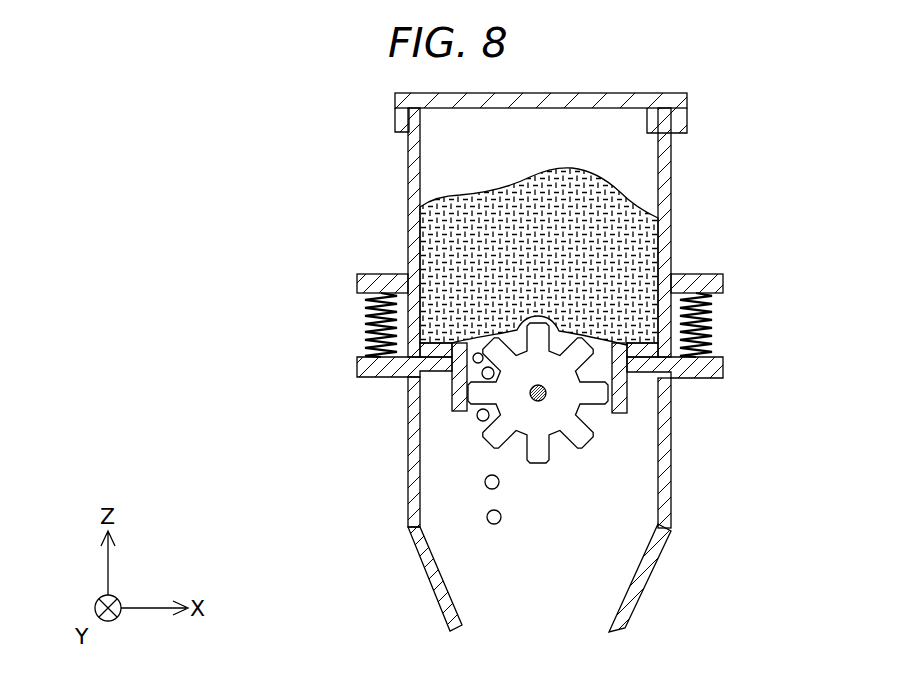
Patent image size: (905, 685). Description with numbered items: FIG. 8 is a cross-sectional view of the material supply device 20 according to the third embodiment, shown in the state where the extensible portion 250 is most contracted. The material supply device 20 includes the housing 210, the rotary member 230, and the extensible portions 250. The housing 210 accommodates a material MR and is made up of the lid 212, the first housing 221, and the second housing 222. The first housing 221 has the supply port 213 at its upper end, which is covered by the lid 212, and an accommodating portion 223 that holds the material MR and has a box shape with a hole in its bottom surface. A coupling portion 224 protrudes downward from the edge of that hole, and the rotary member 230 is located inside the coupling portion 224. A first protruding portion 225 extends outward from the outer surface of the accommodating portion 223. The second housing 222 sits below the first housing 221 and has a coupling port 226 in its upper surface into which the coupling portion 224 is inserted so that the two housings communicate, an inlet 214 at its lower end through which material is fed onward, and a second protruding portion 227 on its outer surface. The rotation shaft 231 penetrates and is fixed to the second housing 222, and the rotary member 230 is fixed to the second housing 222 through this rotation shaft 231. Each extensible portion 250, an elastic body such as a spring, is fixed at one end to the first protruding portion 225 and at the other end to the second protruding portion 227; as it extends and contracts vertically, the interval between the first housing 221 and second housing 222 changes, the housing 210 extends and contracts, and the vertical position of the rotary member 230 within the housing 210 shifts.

The material supply device 20 is at (160, 133).
The housing 210 is at (207, 213).
The lid 212 is at (397, 117).
The supply port 213 is at (651, 95).
The inlet 214 is at (460, 613).
The first housing 221 is at (408, 168).
The second housing 222 is at (407, 473).
The accommodating portion 223 is at (673, 164).
The coupling portion 224 is at (453, 383).
The first protruding portion 225 is at (707, 274).
The coupling port 226 is at (627, 390).
The second protruding portion 227 is at (703, 370).
The rotary member 230 is at (562, 410).
The rotation shaft 231 is at (537, 401).
The extensible portion 250 is at (712, 333).
The material MR is at (440, 242).